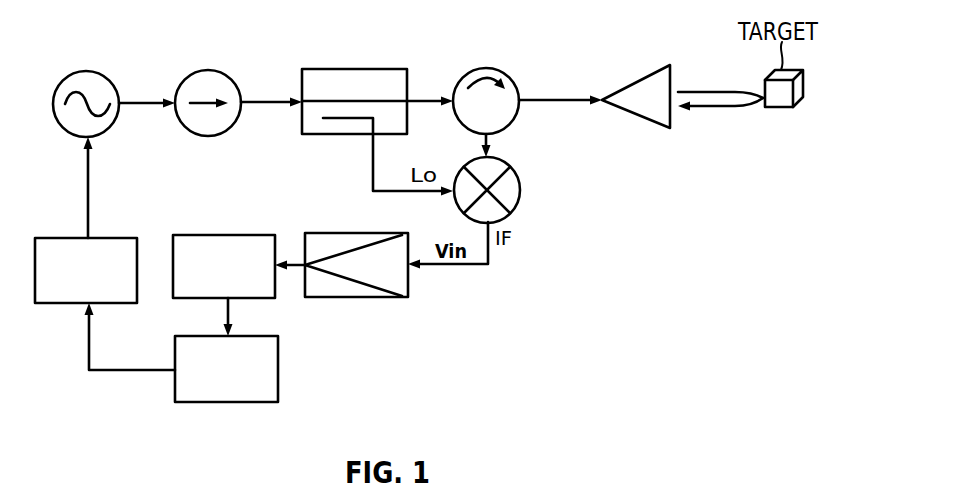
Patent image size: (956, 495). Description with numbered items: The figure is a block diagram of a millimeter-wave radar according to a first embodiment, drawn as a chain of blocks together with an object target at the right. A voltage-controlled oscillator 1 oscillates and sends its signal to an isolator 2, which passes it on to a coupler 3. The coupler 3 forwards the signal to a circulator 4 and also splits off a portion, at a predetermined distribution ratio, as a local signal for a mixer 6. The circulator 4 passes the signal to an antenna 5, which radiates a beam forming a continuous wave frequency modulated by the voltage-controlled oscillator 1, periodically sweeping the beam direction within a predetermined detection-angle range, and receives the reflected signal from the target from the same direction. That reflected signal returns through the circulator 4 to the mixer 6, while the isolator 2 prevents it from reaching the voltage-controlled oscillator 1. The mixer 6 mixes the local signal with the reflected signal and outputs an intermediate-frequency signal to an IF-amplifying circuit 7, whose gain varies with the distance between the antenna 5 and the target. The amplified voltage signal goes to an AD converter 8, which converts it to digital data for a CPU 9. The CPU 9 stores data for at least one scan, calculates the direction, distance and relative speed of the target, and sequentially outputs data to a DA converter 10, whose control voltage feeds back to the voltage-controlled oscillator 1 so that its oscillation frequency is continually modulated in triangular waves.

The voltage-controlled oscillator 1 is at (95, 53).
The isolator 2 is at (210, 70).
The coupler 3 is at (362, 53).
The circulator 4 is at (497, 68).
The antenna 5 is at (640, 52).
The mixer 6 is at (538, 190).
The IF-amplifying circuit 7 is at (423, 315).
The AD converter 8 is at (173, 258).
The CPU 9 is at (226, 369).
The DA converter 10 is at (113, 237).